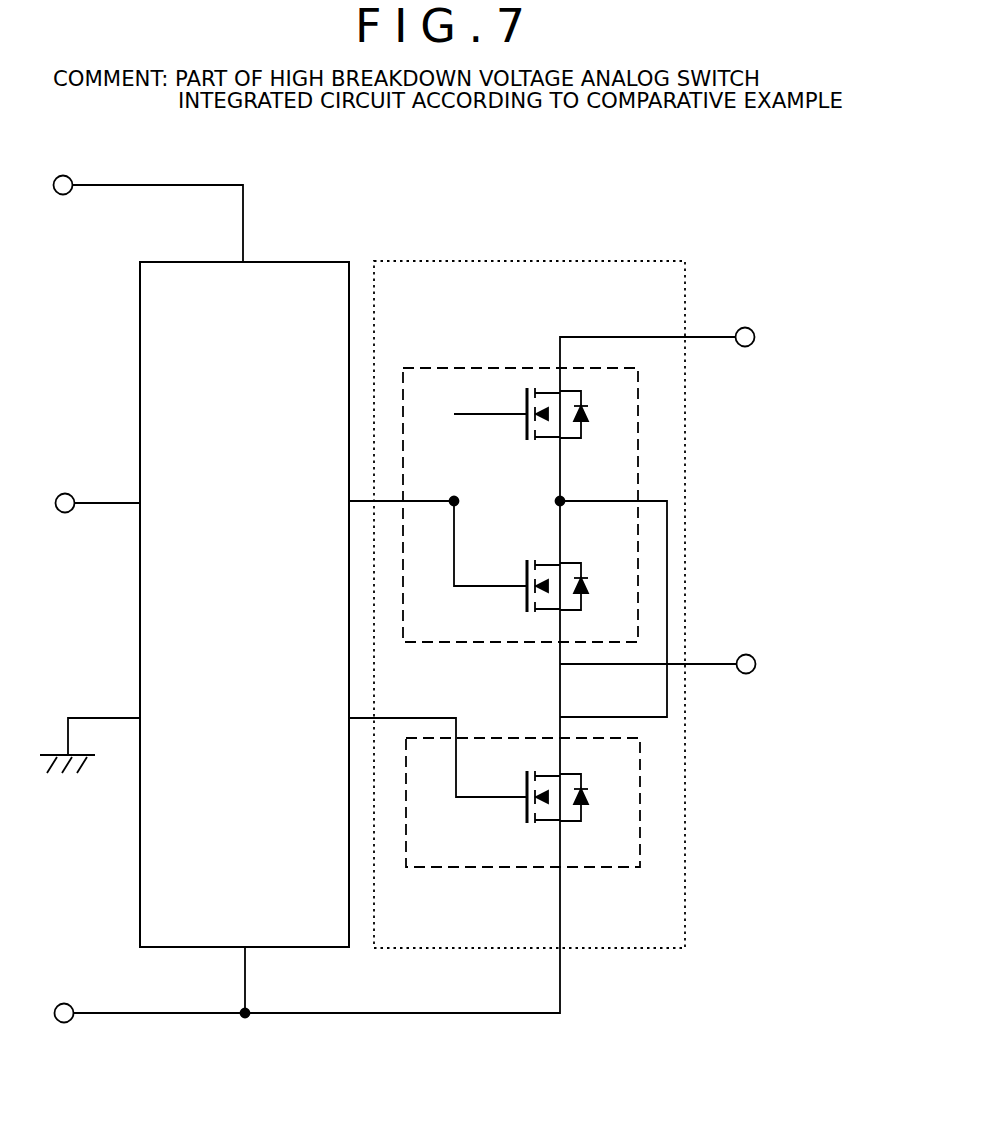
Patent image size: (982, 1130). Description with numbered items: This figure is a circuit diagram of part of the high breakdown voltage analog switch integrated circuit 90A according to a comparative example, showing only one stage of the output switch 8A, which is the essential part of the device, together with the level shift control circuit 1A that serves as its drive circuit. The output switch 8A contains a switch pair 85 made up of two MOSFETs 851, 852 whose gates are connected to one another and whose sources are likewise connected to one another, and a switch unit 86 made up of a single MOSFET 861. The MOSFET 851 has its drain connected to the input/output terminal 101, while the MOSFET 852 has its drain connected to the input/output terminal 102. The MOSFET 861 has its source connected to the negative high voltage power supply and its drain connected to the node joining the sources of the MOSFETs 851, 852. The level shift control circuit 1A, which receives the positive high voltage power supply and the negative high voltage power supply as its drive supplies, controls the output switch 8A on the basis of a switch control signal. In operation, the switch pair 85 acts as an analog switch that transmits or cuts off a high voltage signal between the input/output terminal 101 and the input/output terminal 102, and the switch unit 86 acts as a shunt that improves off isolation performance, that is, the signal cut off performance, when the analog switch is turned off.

The level shift control circuit 1A is at (283, 262).
The output switch 8A is at (485, 260).
The switch pair 85 is at (450, 367).
The MOSFET 851 is at (525, 399).
The MOSFET 852 is at (525, 575).
The switch unit 86 is at (590, 868).
The MOSFET 861 is at (527, 784).
The high breakdown voltage analog switch integrated circuit 90A is at (600, 221).
The input/output terminal 101 is at (745, 327).
The input/output terminal 102 is at (745, 654).